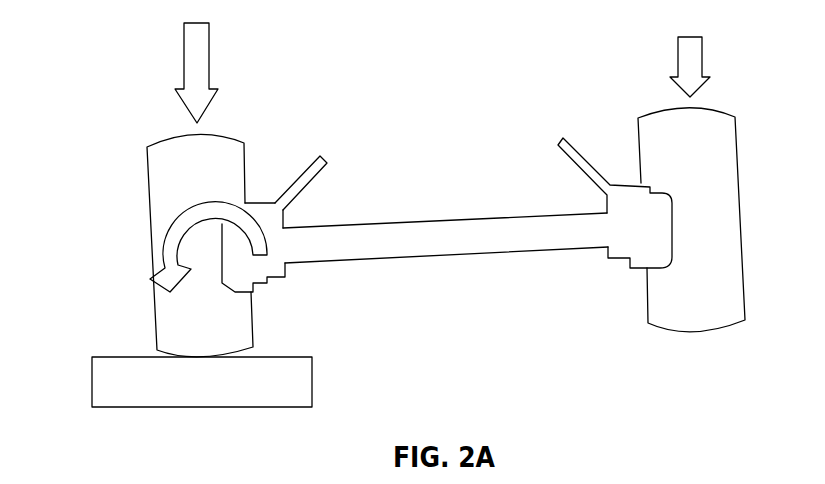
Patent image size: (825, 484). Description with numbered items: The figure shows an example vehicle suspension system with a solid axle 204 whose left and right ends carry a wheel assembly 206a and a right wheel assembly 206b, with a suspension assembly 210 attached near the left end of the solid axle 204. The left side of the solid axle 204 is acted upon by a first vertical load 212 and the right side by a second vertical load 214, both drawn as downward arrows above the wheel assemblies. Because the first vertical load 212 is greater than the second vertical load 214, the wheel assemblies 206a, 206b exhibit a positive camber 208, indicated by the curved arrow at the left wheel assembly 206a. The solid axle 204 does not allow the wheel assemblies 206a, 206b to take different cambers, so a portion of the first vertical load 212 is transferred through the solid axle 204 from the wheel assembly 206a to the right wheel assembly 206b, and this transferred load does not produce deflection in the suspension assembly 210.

The solid axle 204 is at (423, 219).
The wheel assembly 206a is at (150, 220).
The right wheel assembly 206b is at (712, 108).
The positive camber 208 is at (155, 278).
The suspension assembly 210 is at (323, 157).
The first vertical load 212 is at (209, 43).
The second vertical load 214 is at (702, 55).